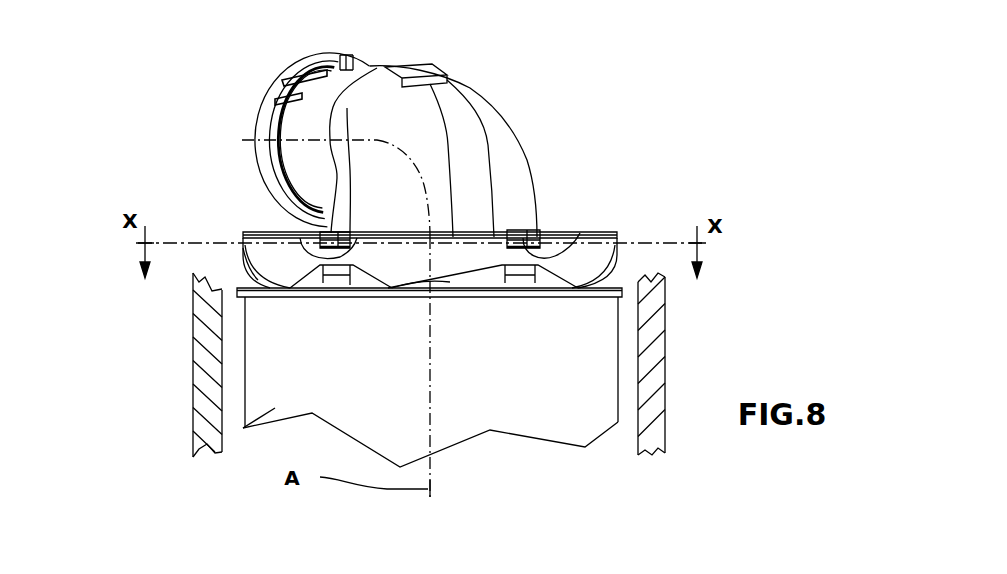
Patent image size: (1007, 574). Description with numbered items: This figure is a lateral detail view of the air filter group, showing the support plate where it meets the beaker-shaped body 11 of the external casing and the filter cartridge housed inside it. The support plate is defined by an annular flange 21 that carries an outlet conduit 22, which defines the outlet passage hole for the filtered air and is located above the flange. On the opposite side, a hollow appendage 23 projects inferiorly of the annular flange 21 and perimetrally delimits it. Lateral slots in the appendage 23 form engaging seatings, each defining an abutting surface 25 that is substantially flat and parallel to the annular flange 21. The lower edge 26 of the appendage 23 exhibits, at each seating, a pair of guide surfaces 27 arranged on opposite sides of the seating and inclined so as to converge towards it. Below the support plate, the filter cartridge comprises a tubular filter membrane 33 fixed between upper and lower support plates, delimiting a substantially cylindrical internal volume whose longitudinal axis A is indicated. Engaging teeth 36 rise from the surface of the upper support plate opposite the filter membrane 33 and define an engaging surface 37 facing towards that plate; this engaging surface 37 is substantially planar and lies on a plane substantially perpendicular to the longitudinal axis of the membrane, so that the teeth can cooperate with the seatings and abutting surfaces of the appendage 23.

The beaker-shaped body 11 is at (647, 428).
The annular flange 21 is at (558, 234).
The outlet conduit 22 is at (440, 115).
The hollow appendage 23 is at (268, 267).
The abutting surface 25 is at (242, 253).
The lower edge 26 is at (423, 278).
The guide surface 27 is at (312, 285).
The tubular filter membrane 33 is at (243, 428).
The engaging tooth 36 is at (347, 285).
The engaging surface 37 is at (580, 234).